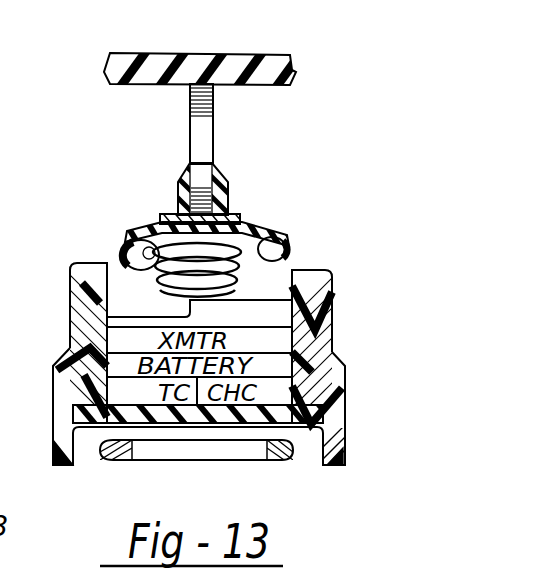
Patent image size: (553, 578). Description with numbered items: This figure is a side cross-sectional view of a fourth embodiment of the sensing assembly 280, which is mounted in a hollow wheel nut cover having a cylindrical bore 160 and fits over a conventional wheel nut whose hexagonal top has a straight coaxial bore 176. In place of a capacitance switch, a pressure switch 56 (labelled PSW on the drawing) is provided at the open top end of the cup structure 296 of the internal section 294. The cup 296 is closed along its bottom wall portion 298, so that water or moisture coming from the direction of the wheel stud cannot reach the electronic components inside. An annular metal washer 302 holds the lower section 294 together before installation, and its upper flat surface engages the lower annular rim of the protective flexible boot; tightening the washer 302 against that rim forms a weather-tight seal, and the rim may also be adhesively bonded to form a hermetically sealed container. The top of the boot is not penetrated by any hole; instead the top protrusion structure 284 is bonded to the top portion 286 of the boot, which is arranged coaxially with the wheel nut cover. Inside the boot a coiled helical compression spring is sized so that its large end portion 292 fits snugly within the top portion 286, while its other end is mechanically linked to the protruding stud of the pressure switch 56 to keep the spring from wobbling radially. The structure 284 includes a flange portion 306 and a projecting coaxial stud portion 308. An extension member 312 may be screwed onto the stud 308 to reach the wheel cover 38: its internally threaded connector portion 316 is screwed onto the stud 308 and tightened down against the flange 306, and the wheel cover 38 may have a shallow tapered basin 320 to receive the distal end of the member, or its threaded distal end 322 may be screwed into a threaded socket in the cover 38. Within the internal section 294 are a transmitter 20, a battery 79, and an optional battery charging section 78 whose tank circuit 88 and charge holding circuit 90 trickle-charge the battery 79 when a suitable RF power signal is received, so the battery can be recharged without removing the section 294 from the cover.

The transmitter 20 is at (318, 337).
The wheel cover 38 is at (244, 68).
The pressure switch 56 is at (73, 277).
The battery charging section 78 is at (123, 363).
The battery 79 is at (303, 360).
The tank circuit 88 is at (110, 388).
The charge holding circuit 90 is at (300, 398).
The cylindrical bore 160 is at (82, 440).
The straight coaxial bore 176 is at (270, 450).
The sensing assembly 280 is at (300, 242).
The top protrusion structure 284 is at (162, 201).
The top portion of protective boot 286 is at (283, 228).
The large end portion of spring 292 is at (284, 250).
The internal section 294 is at (306, 450).
The cup structure 296 is at (126, 246).
The bottom wall portion 298 is at (193, 416).
The annular metal washer 302 is at (337, 292).
The flange portion 306 is at (240, 224).
The stud portion 308 is at (208, 178).
The extension member 312 is at (184, 125).
The connector portion 316 is at (172, 203).
The tapered basin 320 is at (170, 88).
The threaded distal end 322 is at (217, 98).
The pressure switch PSW is at (102, 310).